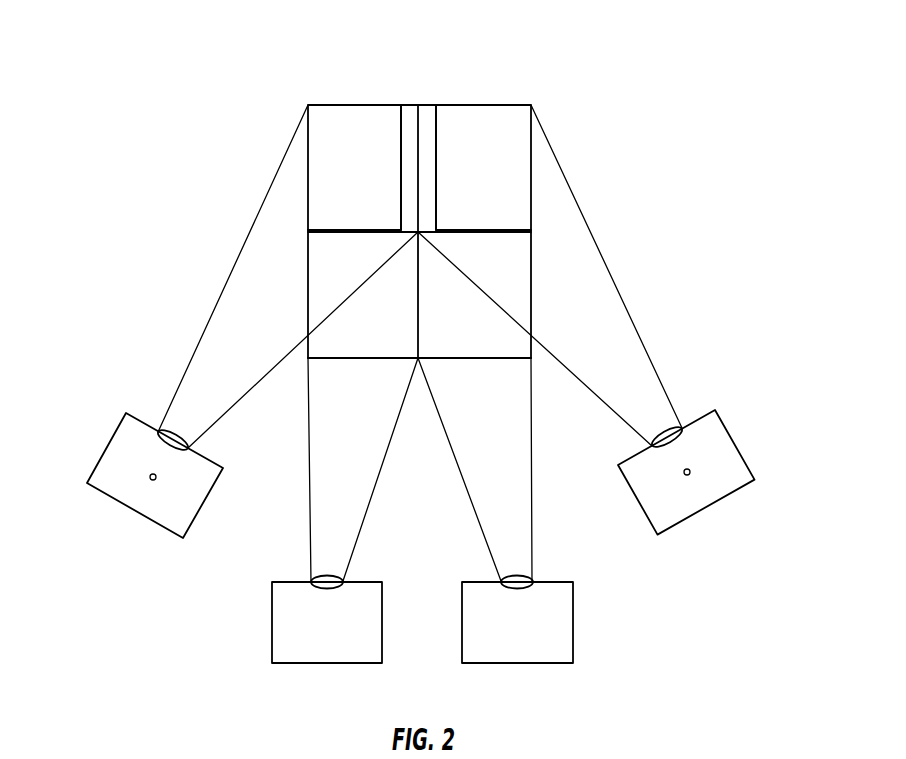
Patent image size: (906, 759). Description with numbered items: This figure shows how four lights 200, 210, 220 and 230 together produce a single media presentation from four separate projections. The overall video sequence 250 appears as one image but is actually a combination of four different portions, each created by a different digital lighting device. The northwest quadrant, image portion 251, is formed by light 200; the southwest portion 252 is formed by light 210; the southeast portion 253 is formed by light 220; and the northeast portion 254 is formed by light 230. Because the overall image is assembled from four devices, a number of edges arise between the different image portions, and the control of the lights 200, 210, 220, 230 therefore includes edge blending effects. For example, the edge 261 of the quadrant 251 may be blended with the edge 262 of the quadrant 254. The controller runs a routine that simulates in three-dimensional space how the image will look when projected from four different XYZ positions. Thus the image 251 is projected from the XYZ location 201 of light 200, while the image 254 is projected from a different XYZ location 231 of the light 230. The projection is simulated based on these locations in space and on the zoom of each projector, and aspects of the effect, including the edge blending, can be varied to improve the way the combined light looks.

The light 200 is at (135, 515).
The XYZ location 201 is at (150, 477).
The light 210 is at (292, 664).
The light 220 is at (553, 664).
The light 230 is at (708, 510).
The XYZ location 231 is at (690, 472).
The overall video sequence 250 is at (530, 66).
The image portion 251 is at (372, 182).
The image portion 252 is at (405, 354).
The image portion 253 is at (473, 354).
The image portion 254 is at (502, 182).
The edge 261 is at (408, 115).
The edge 262 is at (427, 115).